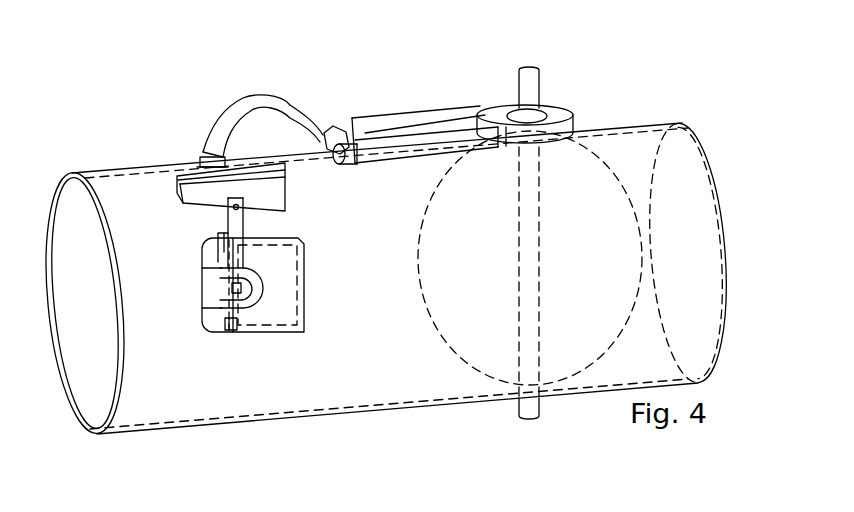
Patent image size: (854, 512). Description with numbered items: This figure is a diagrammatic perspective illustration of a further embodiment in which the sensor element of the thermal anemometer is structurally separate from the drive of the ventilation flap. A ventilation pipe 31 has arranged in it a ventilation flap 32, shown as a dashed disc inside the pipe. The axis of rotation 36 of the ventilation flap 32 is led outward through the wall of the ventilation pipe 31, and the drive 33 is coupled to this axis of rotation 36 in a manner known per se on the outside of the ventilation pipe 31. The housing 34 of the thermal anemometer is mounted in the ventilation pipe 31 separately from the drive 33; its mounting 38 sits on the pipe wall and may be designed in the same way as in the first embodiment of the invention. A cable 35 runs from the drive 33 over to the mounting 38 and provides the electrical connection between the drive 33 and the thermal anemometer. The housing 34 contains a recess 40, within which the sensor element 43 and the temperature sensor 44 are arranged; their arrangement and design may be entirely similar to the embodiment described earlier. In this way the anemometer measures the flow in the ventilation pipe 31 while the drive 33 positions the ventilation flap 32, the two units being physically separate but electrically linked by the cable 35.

The ventilation pipe 31 is at (133, 225).
The ventilation flap 32 is at (562, 366).
The drive 33 is at (400, 128).
The housing 34 is at (285, 336).
The cable 35 is at (243, 107).
The axis of rotation 36 is at (528, 92).
The mounting 38 is at (217, 197).
The recess 40 is at (247, 308).
The sensor element 43 is at (237, 293).
The temperature sensor 44 is at (232, 322).